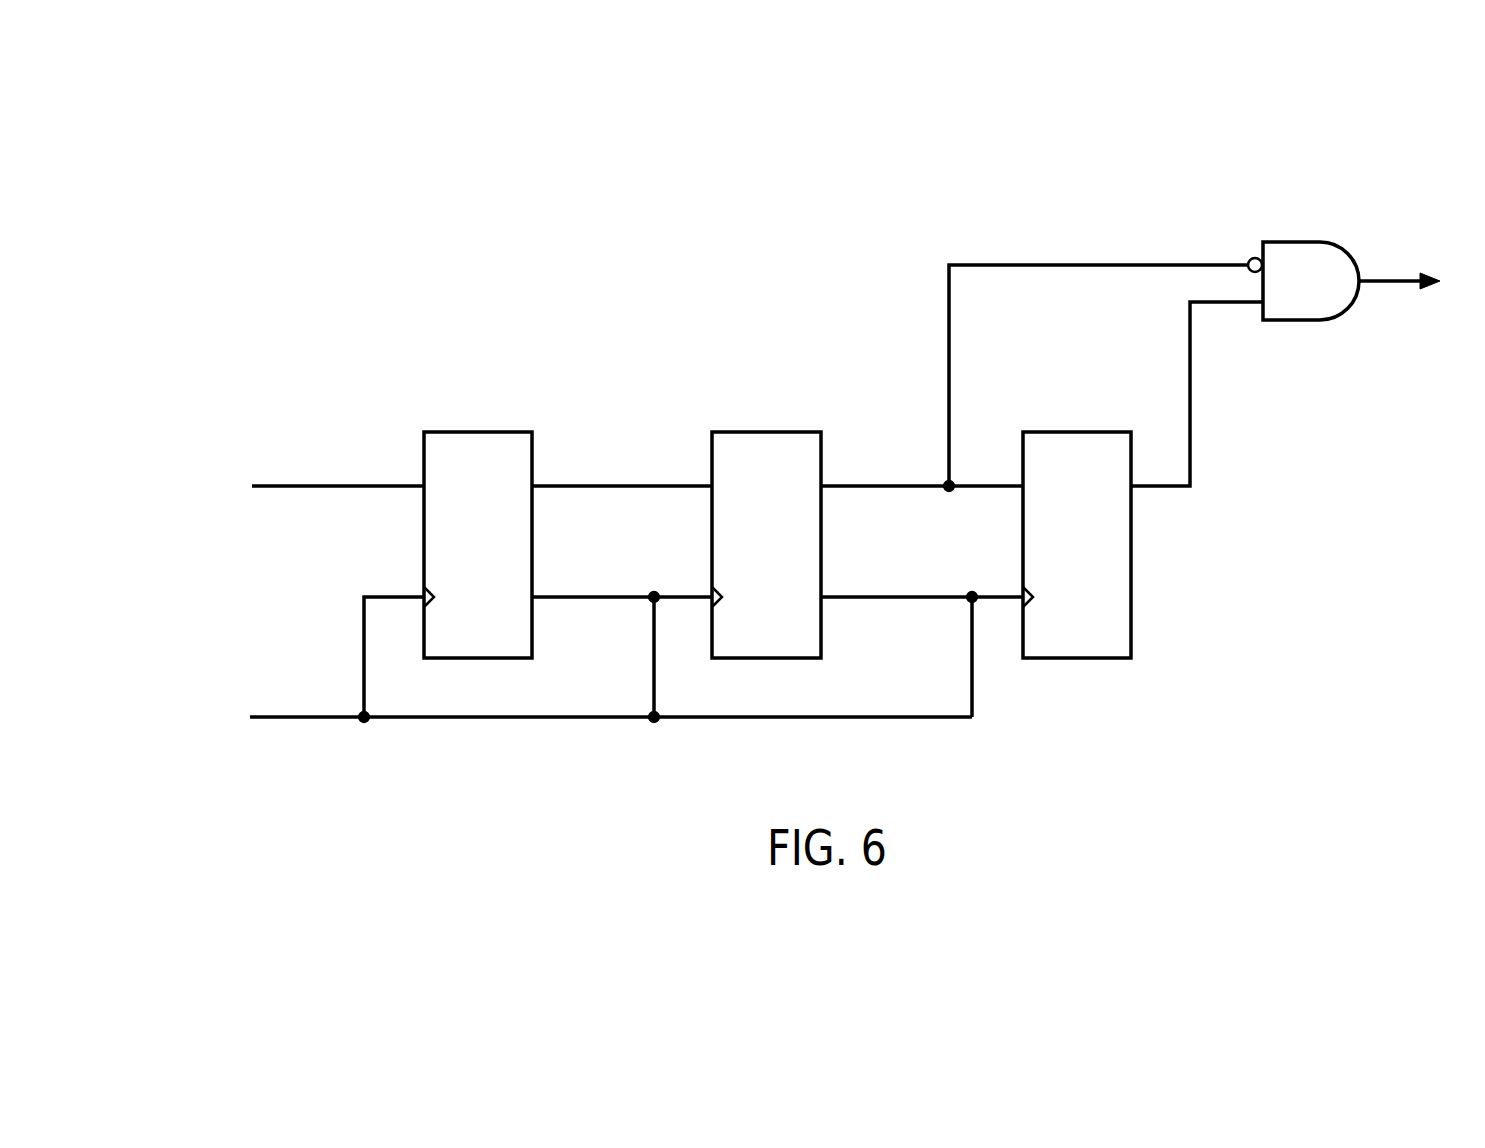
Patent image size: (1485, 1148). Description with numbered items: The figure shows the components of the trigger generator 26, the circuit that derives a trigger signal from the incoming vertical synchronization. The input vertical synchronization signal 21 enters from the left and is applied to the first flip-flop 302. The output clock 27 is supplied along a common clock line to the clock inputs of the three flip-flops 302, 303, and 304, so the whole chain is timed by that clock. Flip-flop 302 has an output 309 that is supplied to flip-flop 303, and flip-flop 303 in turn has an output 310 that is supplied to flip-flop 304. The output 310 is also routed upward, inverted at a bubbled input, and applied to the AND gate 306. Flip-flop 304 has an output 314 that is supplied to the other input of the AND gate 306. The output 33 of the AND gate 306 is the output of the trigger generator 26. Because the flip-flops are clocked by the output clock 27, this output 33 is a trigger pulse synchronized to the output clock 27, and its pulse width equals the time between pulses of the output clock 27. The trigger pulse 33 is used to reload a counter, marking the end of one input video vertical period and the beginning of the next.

The trigger generator 26 is at (1072, 180).
The input vertical synchronization signal 21 is at (313, 486).
The output clock 27 is at (330, 717).
The flip-flop 302 is at (461, 636).
The flip-flop 303 is at (749, 636).
The flip-flop 304 is at (1060, 636).
The AND gate 306 is at (1297, 305).
The output of flip-flop 302 309 is at (628, 486).
The output of flip-flop 303 310 is at (846, 486).
The output of flip-flop 304 314 is at (1157, 486).
The trigger signal 33 is at (1377, 281).